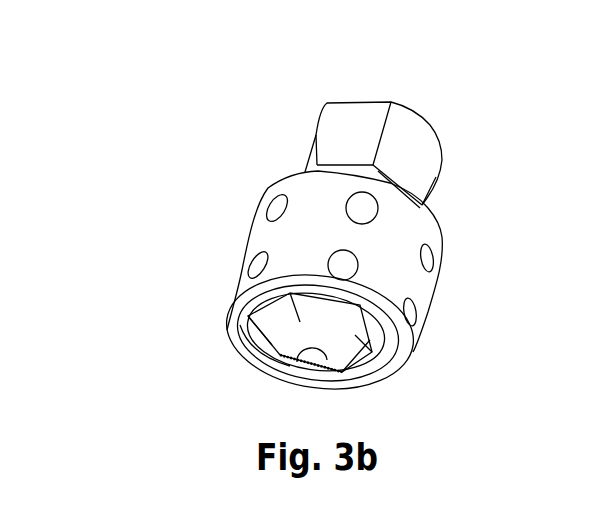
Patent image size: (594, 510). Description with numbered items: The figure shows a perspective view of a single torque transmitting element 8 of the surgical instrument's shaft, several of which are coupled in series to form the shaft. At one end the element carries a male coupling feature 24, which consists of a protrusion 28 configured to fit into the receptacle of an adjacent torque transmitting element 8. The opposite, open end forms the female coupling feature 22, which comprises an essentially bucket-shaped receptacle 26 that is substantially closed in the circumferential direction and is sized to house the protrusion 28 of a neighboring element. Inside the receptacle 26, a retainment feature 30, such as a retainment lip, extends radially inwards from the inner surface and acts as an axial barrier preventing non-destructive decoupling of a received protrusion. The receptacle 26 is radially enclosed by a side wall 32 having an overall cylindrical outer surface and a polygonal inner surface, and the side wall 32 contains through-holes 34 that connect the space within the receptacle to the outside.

The torque transmitting element 8 is at (134, 162).
The male coupling feature 24 is at (296, 100).
The protrusion 28 is at (414, 141).
The side wall 32 is at (238, 303).
The through-hole 34 is at (357, 212).
The receptacle 26 is at (334, 337).
The female coupling feature 22 is at (292, 340).
The retainment feature 30 is at (325, 372).